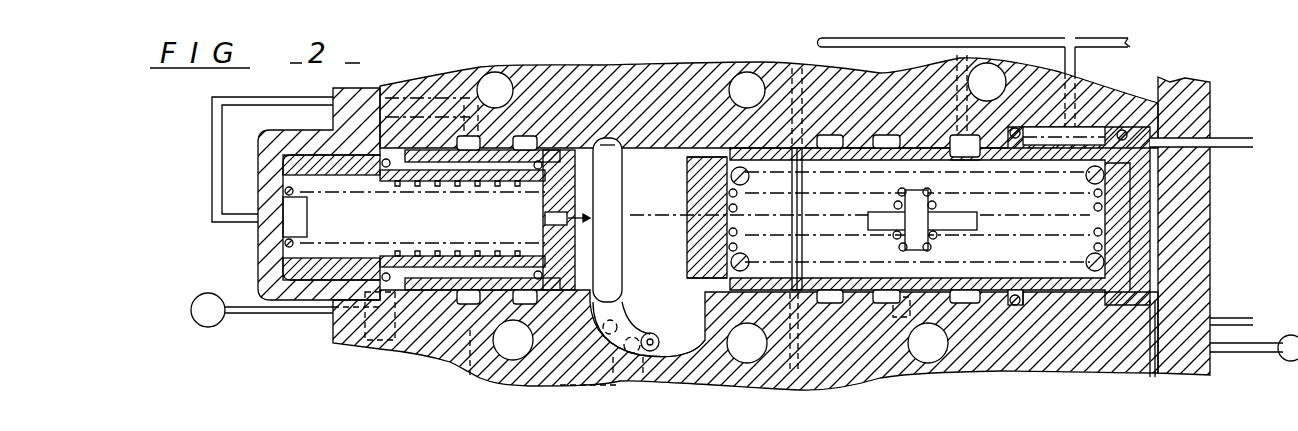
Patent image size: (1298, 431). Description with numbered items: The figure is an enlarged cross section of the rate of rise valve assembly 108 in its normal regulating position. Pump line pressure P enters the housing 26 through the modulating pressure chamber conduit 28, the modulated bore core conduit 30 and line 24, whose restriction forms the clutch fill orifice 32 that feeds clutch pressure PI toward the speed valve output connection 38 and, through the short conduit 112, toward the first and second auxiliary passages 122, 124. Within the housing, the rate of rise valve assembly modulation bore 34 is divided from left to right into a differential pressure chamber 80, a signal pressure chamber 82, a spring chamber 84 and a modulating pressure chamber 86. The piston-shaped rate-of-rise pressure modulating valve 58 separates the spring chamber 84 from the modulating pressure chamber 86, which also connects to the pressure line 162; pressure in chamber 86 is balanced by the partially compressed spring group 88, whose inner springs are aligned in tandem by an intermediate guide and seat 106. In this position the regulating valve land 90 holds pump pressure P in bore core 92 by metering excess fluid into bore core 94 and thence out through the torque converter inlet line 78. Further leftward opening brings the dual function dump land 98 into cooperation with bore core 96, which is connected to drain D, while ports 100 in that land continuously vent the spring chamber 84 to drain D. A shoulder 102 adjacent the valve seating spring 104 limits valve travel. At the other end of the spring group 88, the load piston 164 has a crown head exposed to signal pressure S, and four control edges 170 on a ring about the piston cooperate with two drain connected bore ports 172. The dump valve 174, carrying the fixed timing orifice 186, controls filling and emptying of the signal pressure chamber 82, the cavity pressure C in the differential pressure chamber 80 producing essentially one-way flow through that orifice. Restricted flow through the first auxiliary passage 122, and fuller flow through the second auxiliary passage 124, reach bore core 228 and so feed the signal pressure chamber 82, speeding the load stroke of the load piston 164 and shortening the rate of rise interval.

The line 24 is at (1126, 48).
The rate of rise valve assembly housing 26 is at (1198, 378).
The modulating pressure chamber conduit 28 is at (1077, 63).
The modulated bore core conduit 30 is at (958, 48).
The clutch fill orifice 32 is at (852, 49).
The rate of rise valve assembly modulation bore 34 is at (993, 290).
The speed valve output connection 38 is at (815, 390).
The rate-of-rise pressure modulating valve 58 is at (1132, 172).
The torque converter inlet line 78 is at (1222, 318).
The differential pressure chamber 80 is at (508, 280).
The signal pressure chamber 82 is at (650, 265).
The spring chamber 84 is at (817, 290).
The modulating pressure chamber 86 is at (1152, 305).
The spring group 88 is at (1090, 176).
The regulating valve land 90 is at (950, 140).
The bore core 92 is at (968, 148).
The bore core 94 is at (840, 148).
The bore core 96 is at (827, 138).
The dual function dump land 98 is at (797, 145).
The ports 100 is at (840, 258).
The shoulder 102 is at (1020, 282).
The valve seating spring 104 is at (1015, 126).
The intermediate guide and seat 106 is at (917, 198).
The rate of rise valve assembly 108 is at (758, 272).
The short conduit 112 is at (580, 388).
The first auxiliary passage 122 is at (600, 338).
The second auxiliary passage 124 is at (650, 333).
The pressure line 162 is at (1218, 138).
The load piston 164 is at (637, 165).
The control edges 170 is at (700, 165).
The drain connected bore ports 172 is at (745, 181).
The dump valve 174 is at (540, 160).
The timing orifice 186 is at (570, 210).
The bore core 228 is at (597, 140).
The signal pressure S is at (637, 158).
The dump valve cavity pressure C is at (515, 300).
The drain D is at (744, 327).
The pump line pressure P is at (968, 134).
The clutch pressure PI is at (817, 44).